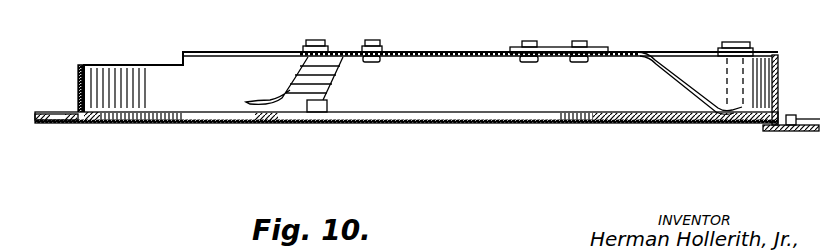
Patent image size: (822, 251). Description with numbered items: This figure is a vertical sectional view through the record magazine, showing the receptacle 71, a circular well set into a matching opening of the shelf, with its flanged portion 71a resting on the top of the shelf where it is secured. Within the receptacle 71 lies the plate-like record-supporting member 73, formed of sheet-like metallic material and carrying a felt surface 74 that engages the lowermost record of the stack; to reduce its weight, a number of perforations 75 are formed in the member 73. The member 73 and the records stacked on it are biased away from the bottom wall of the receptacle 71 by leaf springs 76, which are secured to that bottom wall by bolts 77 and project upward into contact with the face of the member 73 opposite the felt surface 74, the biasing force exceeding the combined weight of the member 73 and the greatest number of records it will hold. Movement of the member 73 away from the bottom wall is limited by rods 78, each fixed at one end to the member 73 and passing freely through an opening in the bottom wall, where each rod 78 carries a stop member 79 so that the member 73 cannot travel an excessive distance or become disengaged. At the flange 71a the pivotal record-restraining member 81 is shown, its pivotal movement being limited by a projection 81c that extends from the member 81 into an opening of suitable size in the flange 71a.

The receptacle 71 is at (282, 52).
The flanged portion 71a is at (48, 122).
The record-supporting member 73 is at (90, 122).
The felt surface 74 is at (277, 123).
The perforations 75 is at (198, 114).
The leaf spring 76 is at (672, 70).
The bolts 77 is at (370, 42).
The rods 78 is at (347, 100).
The stop member 79 is at (323, 40).
The member 81 is at (797, 132).
The projection 81c is at (790, 115).